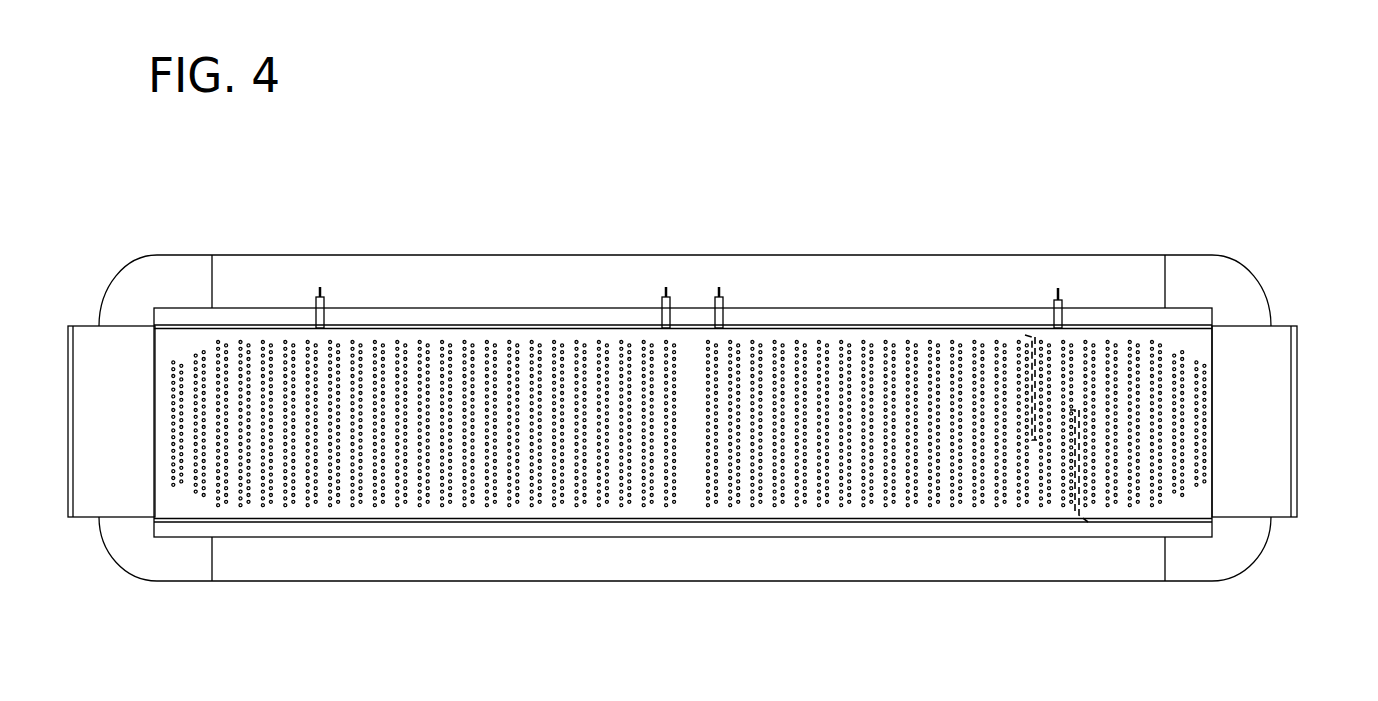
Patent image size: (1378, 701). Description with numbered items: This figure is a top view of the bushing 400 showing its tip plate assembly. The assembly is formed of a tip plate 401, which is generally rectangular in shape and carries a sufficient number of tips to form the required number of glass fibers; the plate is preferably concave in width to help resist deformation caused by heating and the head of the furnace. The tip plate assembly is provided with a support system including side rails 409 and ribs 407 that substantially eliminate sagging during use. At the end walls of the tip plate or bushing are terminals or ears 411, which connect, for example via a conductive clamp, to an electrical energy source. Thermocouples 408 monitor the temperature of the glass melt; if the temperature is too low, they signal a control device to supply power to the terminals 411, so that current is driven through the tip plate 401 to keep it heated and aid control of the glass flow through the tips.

The bushing 400 is at (1213, 237).
The tip plate 401 is at (901, 340).
The ribs 407 is at (1033, 343).
The thermocouples 408 is at (327, 302).
The side rails 409 is at (812, 318).
The terminals or ears 411 is at (1270, 394).